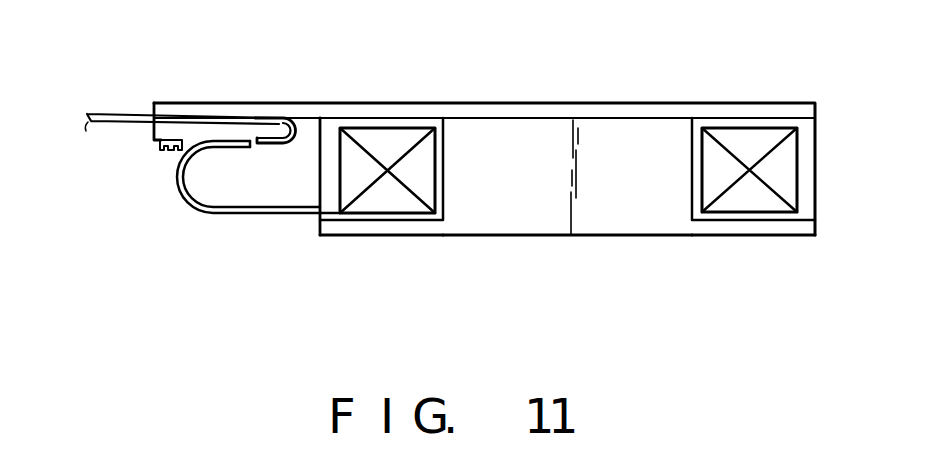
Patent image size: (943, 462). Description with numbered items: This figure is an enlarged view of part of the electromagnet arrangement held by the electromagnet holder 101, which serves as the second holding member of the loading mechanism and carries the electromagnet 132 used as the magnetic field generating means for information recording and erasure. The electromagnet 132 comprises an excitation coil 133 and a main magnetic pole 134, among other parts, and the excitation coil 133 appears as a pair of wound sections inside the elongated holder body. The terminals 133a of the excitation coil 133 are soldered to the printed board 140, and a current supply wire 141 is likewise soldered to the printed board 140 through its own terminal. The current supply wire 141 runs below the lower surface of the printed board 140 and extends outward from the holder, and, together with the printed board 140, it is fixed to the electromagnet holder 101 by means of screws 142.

The electromagnet holder 101 is at (624, 101).
The electromagnet 132 is at (537, 215).
The excitation coil 133 is at (388, 137).
The terminal of the excitation coil 133a is at (232, 143).
The main magnetic pole 134 is at (642, 213).
The printed board 140 is at (152, 133).
The current supply wire 141 is at (127, 114).
The screw 142 is at (158, 149).